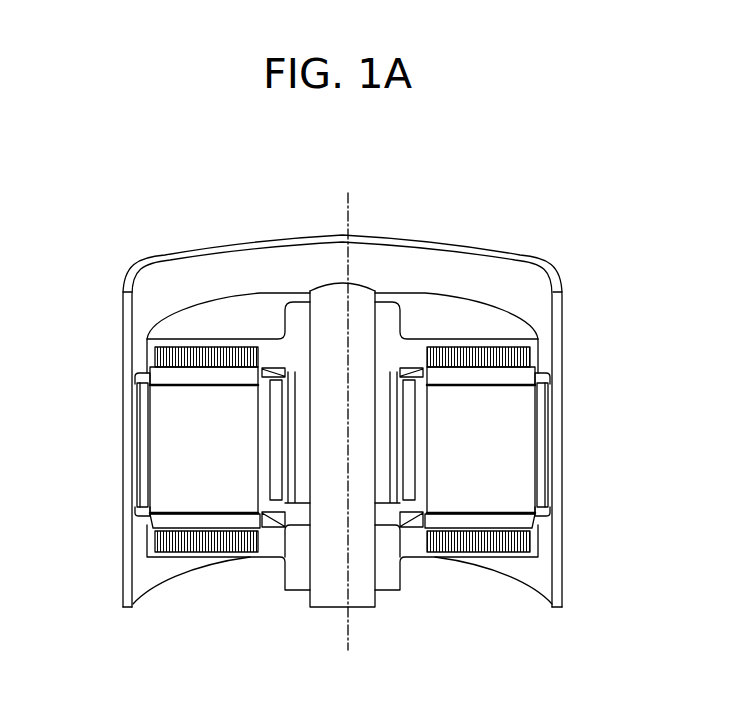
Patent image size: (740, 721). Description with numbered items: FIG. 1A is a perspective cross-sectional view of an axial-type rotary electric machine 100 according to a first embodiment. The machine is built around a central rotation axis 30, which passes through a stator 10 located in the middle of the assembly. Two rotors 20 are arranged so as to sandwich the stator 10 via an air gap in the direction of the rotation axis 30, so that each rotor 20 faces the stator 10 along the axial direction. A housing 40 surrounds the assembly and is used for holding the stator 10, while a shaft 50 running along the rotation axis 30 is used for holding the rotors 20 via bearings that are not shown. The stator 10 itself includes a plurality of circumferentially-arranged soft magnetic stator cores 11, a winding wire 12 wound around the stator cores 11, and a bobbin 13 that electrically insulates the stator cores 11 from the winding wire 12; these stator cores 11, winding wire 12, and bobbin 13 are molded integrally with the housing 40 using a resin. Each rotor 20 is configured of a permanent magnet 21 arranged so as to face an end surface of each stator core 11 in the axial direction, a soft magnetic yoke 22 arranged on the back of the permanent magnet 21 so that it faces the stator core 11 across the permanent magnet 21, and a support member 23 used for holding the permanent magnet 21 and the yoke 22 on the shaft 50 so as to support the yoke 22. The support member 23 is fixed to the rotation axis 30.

The axial-type rotary electric machine 100 is at (120, 176).
The stator 10 is at (304, 421).
The stator core 11 is at (391, 449).
The winding wire 12 is at (378, 458).
The bobbin 13 is at (372, 444).
The rotor 20 is at (292, 446).
The permanent magnet 21 is at (396, 426).
The yoke 22 is at (389, 413).
The support member 23 is at (342, 268).
The rotation axis 30 is at (313, 441).
The housing 40 is at (299, 576).
The shaft 50 is at (299, 466).